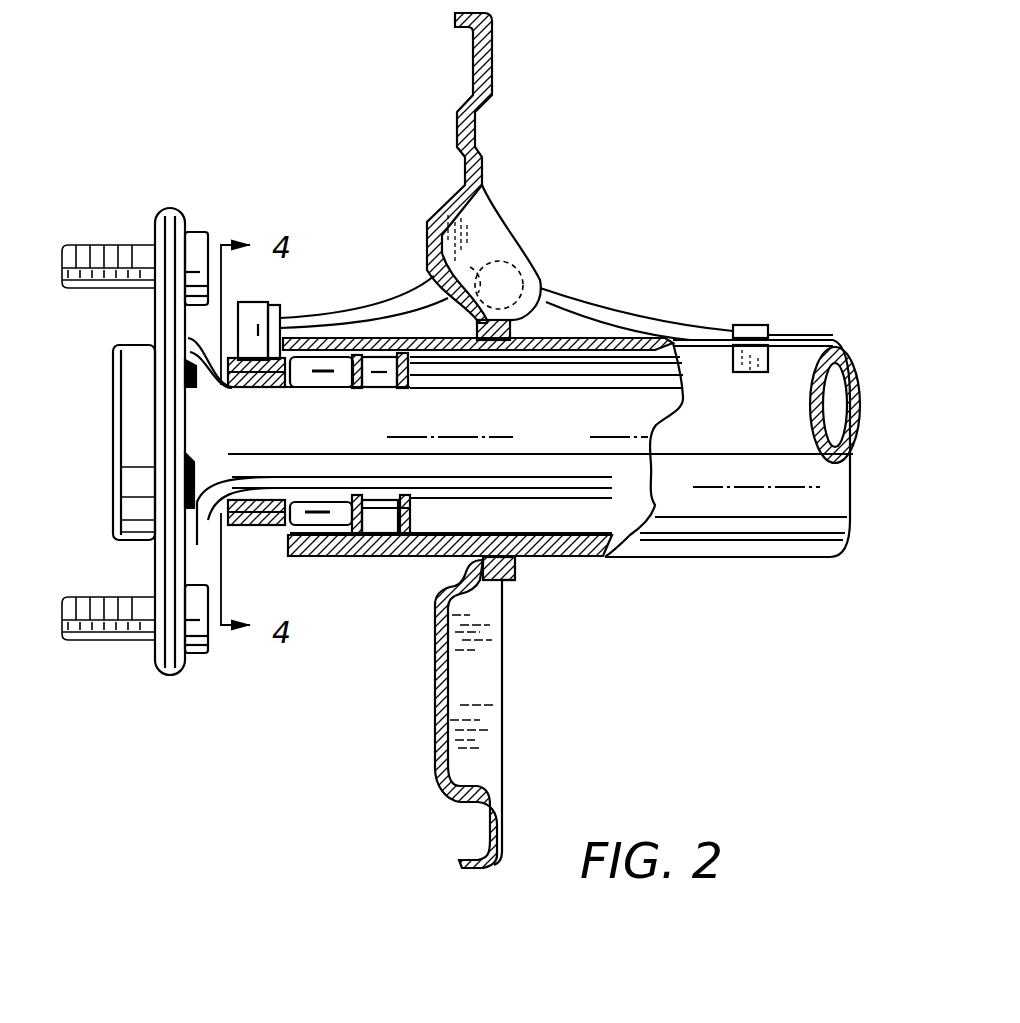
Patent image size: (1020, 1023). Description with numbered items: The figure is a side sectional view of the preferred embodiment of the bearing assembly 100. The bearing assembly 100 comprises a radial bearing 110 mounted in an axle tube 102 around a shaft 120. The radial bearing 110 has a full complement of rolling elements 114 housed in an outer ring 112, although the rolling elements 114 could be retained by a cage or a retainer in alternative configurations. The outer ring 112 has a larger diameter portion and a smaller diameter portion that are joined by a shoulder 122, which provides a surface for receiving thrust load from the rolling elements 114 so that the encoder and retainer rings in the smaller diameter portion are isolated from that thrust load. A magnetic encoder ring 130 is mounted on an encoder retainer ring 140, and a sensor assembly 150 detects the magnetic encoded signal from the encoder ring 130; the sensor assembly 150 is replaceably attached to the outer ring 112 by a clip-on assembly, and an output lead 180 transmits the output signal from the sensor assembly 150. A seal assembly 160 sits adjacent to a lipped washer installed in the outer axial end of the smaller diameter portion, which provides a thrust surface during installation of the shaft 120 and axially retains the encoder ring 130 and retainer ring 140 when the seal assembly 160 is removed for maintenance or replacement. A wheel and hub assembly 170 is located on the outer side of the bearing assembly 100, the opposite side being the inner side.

The bearing assembly 100 is at (670, 105).
The axle tube 102 is at (540, 552).
The radial bearing 110 is at (372, 393).
The outer ring 112 is at (273, 537).
The rolling elements 114 is at (312, 390).
The shaft 120 is at (640, 438).
The shoulder 122 is at (398, 514).
The magnetic encoder ring 130 is at (287, 533).
The encoder retainer ring 140 is at (278, 390).
The sensor assembly 150 is at (262, 315).
The seal assembly 160 is at (228, 382).
The wheel and hub assembly 170 is at (108, 497).
The output lead 180 is at (792, 342).